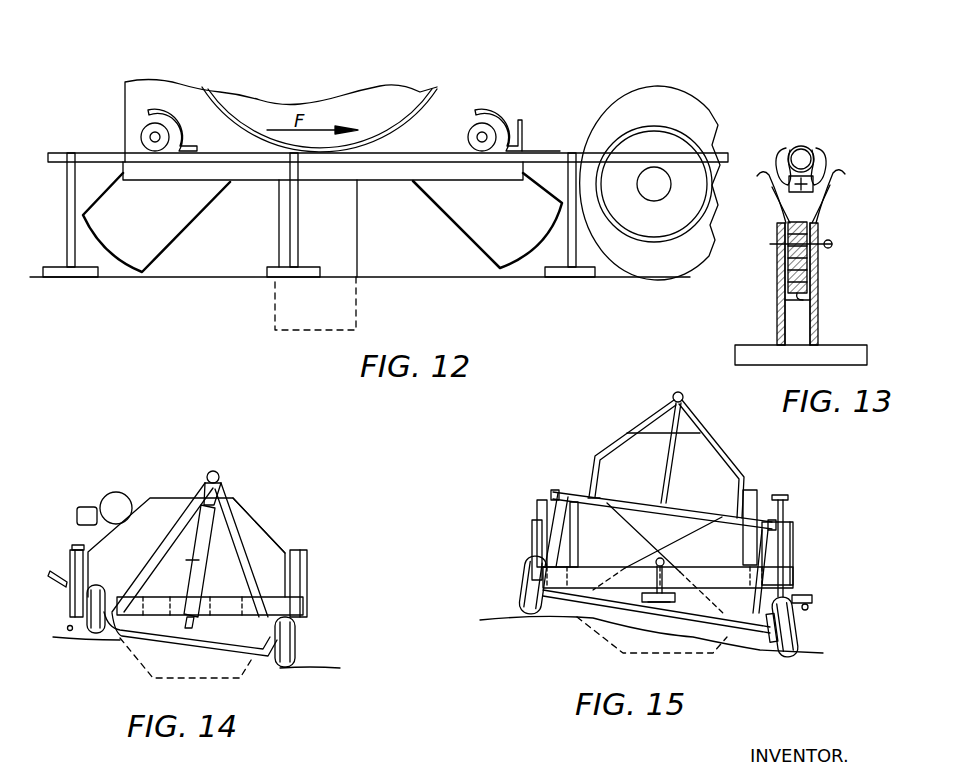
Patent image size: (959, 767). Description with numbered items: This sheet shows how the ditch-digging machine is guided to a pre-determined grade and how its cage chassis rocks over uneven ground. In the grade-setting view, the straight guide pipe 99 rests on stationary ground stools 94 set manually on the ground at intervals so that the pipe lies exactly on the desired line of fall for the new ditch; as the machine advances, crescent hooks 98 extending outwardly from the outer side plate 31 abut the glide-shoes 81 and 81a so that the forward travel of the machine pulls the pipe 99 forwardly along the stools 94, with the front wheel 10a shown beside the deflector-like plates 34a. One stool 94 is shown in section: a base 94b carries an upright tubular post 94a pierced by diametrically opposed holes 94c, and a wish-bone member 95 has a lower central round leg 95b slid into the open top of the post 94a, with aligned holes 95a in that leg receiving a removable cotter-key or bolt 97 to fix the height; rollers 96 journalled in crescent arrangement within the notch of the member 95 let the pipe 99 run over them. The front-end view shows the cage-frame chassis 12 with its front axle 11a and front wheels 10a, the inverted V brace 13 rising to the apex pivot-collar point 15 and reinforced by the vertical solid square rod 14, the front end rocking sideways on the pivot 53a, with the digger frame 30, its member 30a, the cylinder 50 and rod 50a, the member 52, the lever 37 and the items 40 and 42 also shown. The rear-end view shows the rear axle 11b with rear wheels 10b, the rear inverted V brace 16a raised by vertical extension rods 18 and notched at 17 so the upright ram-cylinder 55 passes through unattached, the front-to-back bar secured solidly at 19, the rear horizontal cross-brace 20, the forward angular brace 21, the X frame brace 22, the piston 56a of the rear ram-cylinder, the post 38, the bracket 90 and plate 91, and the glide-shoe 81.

In FIG. 12, the outer side plate 31 is at (136, 82).
In FIG. 12, the crescent hook 98 is at (172, 117).
In FIG. 12, the glide-shoe 81a is at (466, 127).
In FIG. 12, the straight guide pipe 99 is at (545, 153).
In FIG. 13, the straight guide pipe 99 is at (802, 147).
In FIG. 14, the straight guide pipe 99 is at (67, 628).
In FIG. 15, the straight guide pipe 99 is at (808, 608).
In FIG. 12, the ground stool 94 is at (68, 222).
In FIG. 13, the ground stool 94 is at (829, 291).
In FIG. 12, the deflector plate 34a is at (182, 222).
In FIG. 12, the front wheel 10a is at (670, 97).
In FIG. 14, the front wheel 10a is at (283, 667).
In FIG. 13, the tubular post 94a is at (818, 327).
In FIG. 13, the stool base 94b is at (735, 356).
In FIG. 13, the post holes 94c is at (815, 267).
In FIG. 13, the wish-bone extension member 95 is at (825, 200).
In FIG. 13, the leg holes 95a is at (792, 258).
In FIG. 13, the lower central leg 95b is at (803, 300).
In FIG. 13, the roller 96 is at (798, 147).
In FIG. 13, the cotter-key or bolt 97 is at (832, 243).
In FIG. 14, the cage-frame chassis 12 is at (217, 472).
In FIG. 14, the vertical solid square rod 14 is at (209, 471).
In FIG. 14, the apex pivot-collar point 15 is at (222, 483).
In FIG. 14, the inverted V brace 13 is at (183, 503).
In FIG. 14, the frame member 52 is at (233, 500).
In FIG. 15, the frame member 52 is at (573, 528).
In FIG. 14, the hydraulic cylinder 50 is at (193, 573).
In FIG. 14, the pivot 53a is at (195, 595).
In FIG. 14, the cylinder rod 50a is at (194, 621).
In FIG. 14, the digger frame 30 is at (278, 573).
In FIG. 15, the digger frame 30 is at (772, 578).
In FIG. 14, the axle 30a is at (158, 608).
In FIG. 14, the front axle 11a is at (150, 628).
In FIG. 14, the lever 37 is at (60, 587).
In FIG. 14, the control box 40 is at (82, 507).
In FIG. 14, the reel 42 is at (120, 496).
In FIG. 15, the front to back chassis frame bar 19 is at (684, 397).
In FIG. 15, the rear inverted V brace 16a is at (647, 420).
In FIG. 15, the horizontal notch 17 is at (587, 493).
In FIG. 15, the vertical extension rod 18 is at (555, 507).
In FIG. 15, the forward angular brace 21 is at (672, 477).
In FIG. 15, the rear horizontal cross-brace 20 is at (682, 507).
In FIG. 15, the X frame brace 22 is at (687, 533).
In FIG. 15, the piston 56a is at (577, 570).
In FIG. 15, the upright ram-cylinder 55 is at (747, 542).
In FIG. 15, the bracket 90 is at (657, 580).
In FIG. 15, the bracket plate 91 is at (675, 610).
In FIG. 15, the rear wheel 10b is at (523, 605).
In FIG. 15, the rear axle 11b is at (740, 627).
In FIG. 15, the post 38 is at (788, 503).
In FIG. 15, the glide-shoe 81 is at (812, 597).